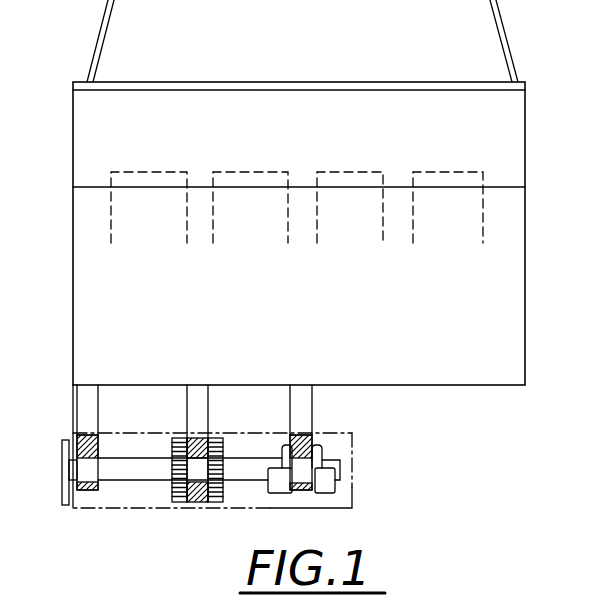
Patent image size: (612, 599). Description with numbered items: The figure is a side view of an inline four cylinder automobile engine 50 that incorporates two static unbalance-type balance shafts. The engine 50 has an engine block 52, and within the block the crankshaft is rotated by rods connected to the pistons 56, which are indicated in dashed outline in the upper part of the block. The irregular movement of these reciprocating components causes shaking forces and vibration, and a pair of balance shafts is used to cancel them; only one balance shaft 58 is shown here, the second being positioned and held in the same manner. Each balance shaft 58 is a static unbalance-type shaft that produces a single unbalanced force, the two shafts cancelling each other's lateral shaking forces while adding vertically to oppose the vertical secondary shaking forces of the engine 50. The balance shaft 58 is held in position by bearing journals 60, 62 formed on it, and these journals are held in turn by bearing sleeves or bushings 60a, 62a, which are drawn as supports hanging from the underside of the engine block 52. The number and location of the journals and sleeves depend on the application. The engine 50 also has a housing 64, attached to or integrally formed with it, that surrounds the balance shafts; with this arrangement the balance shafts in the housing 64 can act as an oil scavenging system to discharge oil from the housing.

The engine 50 is at (60, 138).
The engine block 52 is at (519, 267).
The pistons 56 is at (422, 172).
The balance shaft 58 is at (590, 483).
The bearing journal 60 is at (302, 487).
The bearing sleeve 60a is at (305, 411).
The bearing journal 62 is at (198, 475).
The bearing sleeve 62a is at (202, 407).
The housing 64 is at (352, 488).